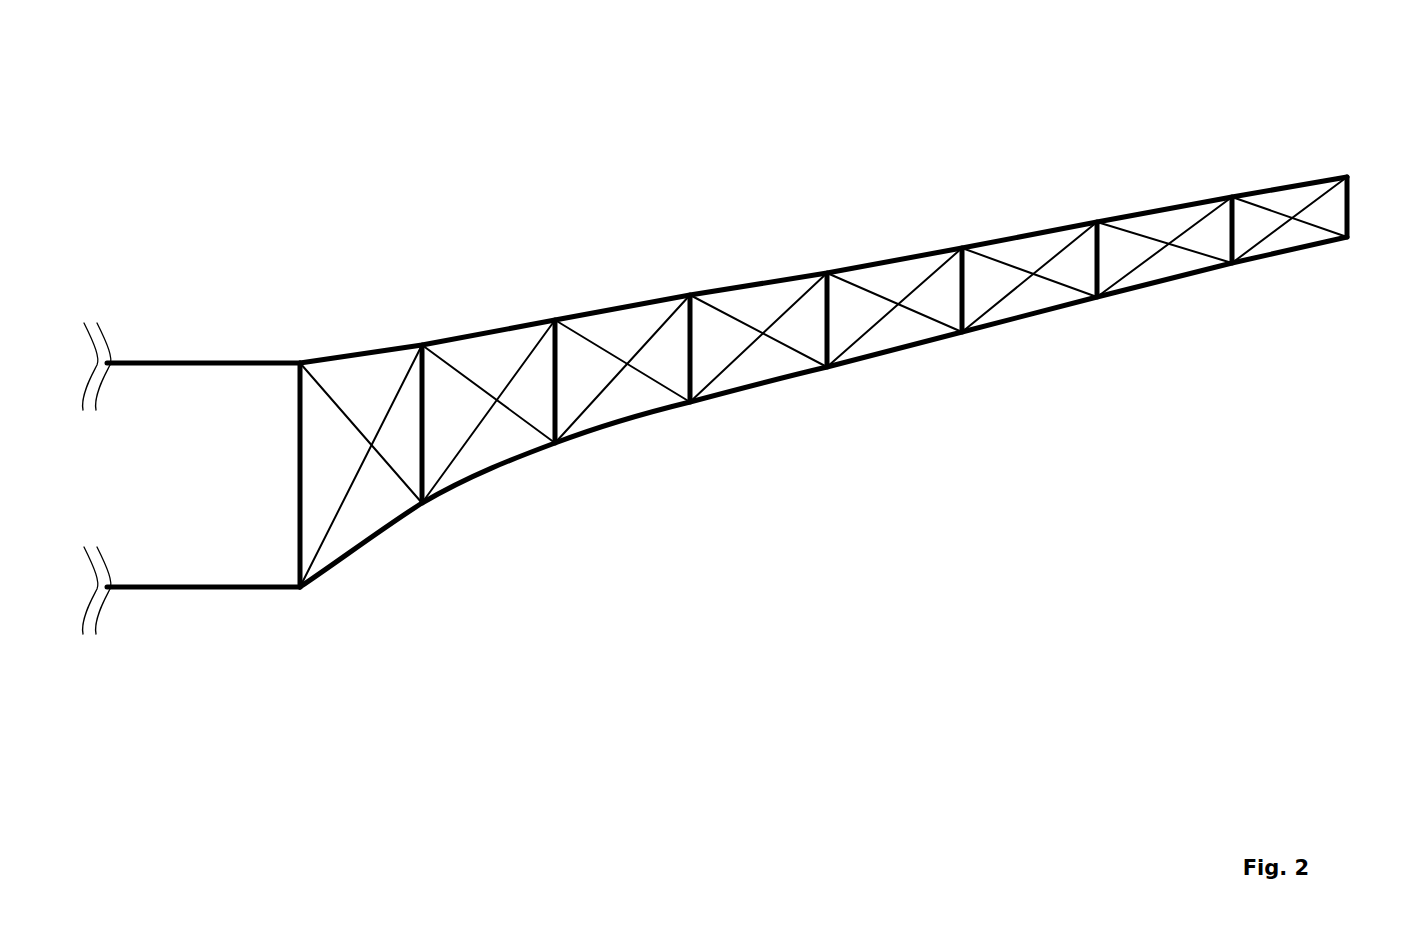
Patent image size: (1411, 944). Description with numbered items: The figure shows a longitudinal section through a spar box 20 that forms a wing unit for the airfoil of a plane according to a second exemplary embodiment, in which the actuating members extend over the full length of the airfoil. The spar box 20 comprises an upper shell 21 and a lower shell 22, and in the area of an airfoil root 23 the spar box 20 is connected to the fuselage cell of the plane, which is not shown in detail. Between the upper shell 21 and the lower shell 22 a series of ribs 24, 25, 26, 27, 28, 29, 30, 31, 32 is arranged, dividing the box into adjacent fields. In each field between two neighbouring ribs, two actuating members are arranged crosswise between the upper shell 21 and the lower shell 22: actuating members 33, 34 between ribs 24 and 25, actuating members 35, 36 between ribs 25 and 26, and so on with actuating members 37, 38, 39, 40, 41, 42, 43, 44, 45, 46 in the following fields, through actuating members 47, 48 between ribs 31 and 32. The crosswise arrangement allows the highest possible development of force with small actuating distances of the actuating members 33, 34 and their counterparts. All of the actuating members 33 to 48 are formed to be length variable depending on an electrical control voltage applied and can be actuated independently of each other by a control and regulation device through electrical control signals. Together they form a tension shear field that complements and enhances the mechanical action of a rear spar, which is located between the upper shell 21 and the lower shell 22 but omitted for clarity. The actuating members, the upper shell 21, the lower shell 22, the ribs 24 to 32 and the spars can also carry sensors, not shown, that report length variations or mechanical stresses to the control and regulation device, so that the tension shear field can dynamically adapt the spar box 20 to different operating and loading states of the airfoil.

The spar box 20 is at (735, 105).
The upper shell 21 is at (660, 297).
The lower shell 22 is at (752, 390).
The airfoil root 23 is at (212, 668).
The rib 24 is at (303, 533).
The rib 25 is at (423, 462).
The rib 26 is at (557, 402).
The rib 27 is at (693, 365).
The rib 28 is at (830, 326).
The rib 29 is at (963, 293).
The rib 30 is at (1100, 262).
The rib 31 is at (1237, 228).
The rib 32 is at (1353, 197).
The actuating member 33 is at (323, 388).
The actuating member 34 is at (396, 392).
The actuating member 35 is at (462, 367).
The actuating member 36 is at (528, 357).
The actuating member 37 is at (595, 340).
The actuating member 38 is at (660, 329).
The actuating member 39 is at (728, 309).
The actuating member 40 is at (797, 301).
The actuating member 41 is at (860, 285).
The actuating member 42 is at (932, 274).
The actuating member 43 is at (992, 259).
The actuating member 44 is at (1065, 247).
The actuating member 45 is at (1125, 230).
The actuating member 46 is at (1200, 220).
The actuating member 47 is at (1255, 205).
The actuating member 48 is at (1312, 201).